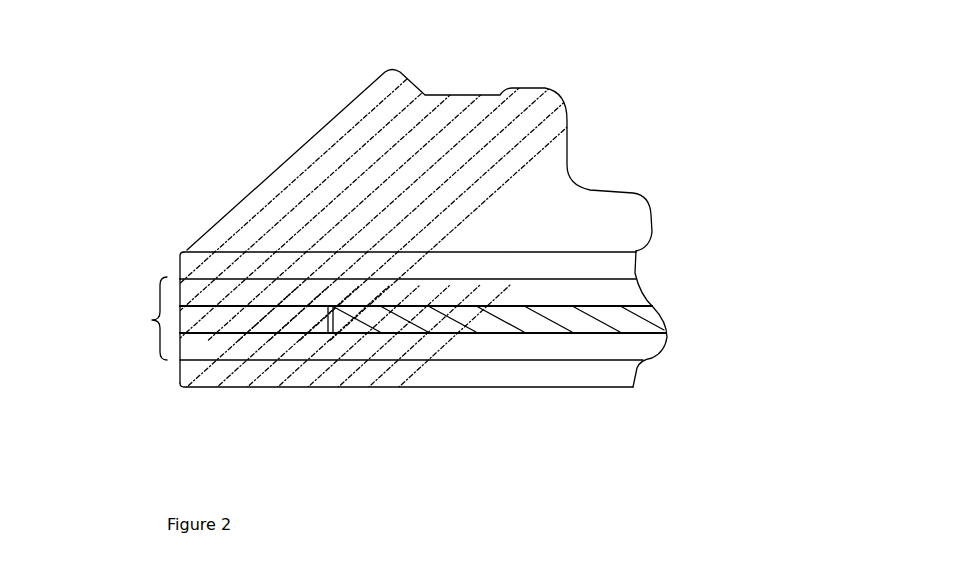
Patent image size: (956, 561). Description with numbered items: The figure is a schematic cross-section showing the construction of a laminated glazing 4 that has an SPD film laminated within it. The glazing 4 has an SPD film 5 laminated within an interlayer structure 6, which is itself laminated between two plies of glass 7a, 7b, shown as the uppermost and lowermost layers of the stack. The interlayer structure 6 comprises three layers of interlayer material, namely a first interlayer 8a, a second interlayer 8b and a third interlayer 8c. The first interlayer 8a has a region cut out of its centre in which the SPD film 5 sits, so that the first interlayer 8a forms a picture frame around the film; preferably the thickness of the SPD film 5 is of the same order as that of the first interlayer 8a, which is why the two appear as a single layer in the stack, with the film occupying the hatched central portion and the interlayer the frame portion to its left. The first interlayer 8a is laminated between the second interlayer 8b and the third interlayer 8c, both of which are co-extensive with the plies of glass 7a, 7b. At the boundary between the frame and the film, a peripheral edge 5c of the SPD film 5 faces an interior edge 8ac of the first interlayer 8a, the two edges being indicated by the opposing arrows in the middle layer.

The glazing 4 is at (682, 130).
The SPD film 5 is at (647, 313).
The peripheral edge of the SPD film 5c is at (334, 320).
The interlayer structure 6 is at (142, 318).
The ply of glass 7a is at (197, 262).
The ply of glass 7b is at (277, 375).
The first interlayer 8a is at (180, 363).
The second interlayer 8b is at (630, 292).
The third interlayer 8c is at (647, 345).
The interior edge of the first interlayer 8ac is at (327, 320).